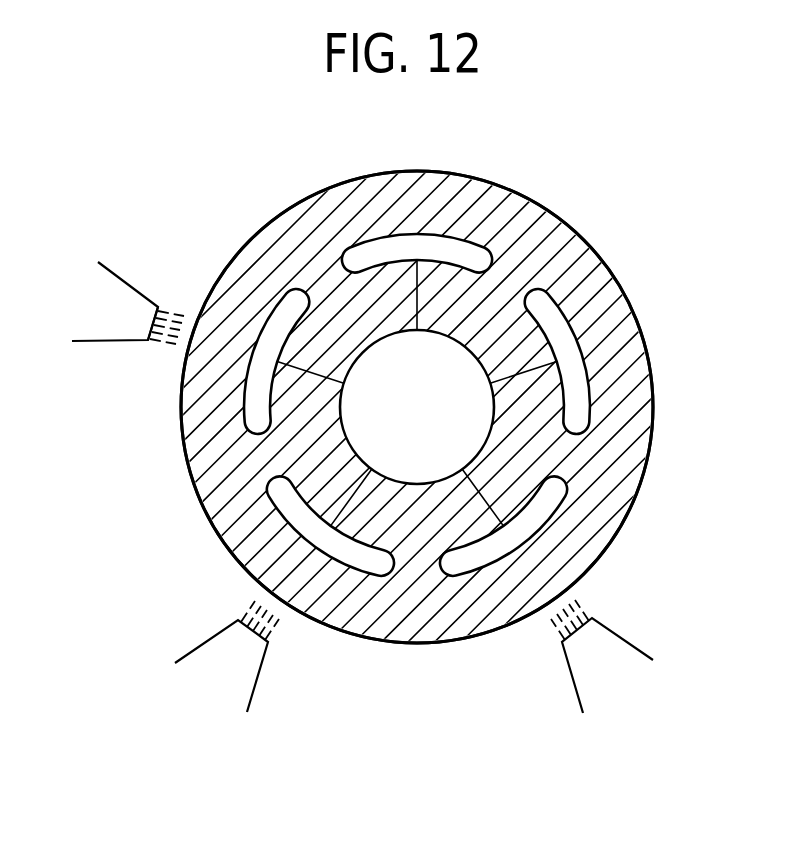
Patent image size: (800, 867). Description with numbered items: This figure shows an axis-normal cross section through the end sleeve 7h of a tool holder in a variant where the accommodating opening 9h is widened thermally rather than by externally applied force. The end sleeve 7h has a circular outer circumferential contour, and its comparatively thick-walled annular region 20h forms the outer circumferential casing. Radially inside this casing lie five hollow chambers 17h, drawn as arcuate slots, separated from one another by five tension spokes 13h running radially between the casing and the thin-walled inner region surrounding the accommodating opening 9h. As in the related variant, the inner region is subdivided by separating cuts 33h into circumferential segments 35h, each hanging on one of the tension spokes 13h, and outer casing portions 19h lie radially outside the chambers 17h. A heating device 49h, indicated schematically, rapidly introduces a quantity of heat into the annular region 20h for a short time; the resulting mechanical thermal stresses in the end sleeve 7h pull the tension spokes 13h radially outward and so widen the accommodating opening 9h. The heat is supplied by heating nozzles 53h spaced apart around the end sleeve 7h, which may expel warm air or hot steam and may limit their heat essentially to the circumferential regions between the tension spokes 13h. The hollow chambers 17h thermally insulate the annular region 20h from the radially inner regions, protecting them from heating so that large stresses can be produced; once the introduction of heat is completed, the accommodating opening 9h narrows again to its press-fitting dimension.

The end sleeve 7h is at (283, 215).
The annular region 20h is at (455, 177).
The accommodating opening 9h is at (352, 443).
The tension spokes 13h is at (501, 276).
The hollow chambers 17h is at (552, 327).
The outer rim portion 19h is at (602, 357).
The connecting slit 33h is at (417, 310).
The web portion 35h is at (472, 323).
The heating nozzles 53h is at (112, 292).
The heating device 49h is at (147, 349).